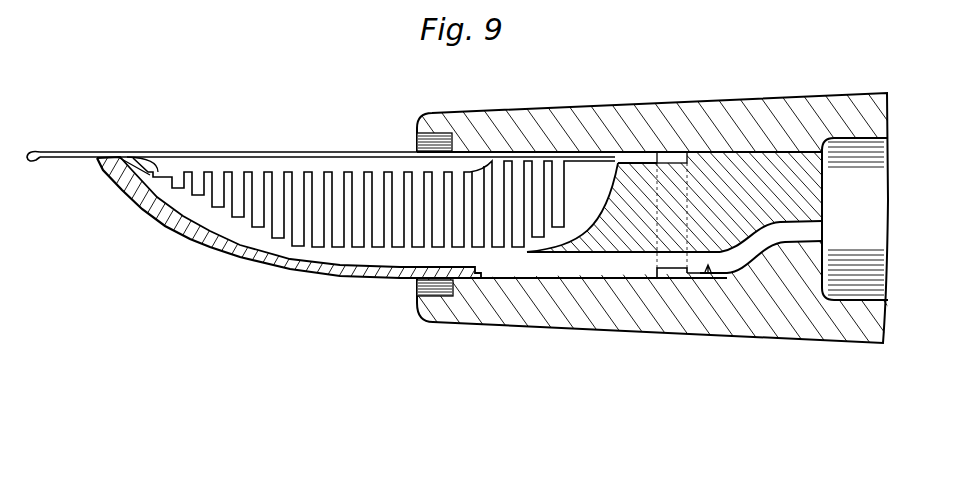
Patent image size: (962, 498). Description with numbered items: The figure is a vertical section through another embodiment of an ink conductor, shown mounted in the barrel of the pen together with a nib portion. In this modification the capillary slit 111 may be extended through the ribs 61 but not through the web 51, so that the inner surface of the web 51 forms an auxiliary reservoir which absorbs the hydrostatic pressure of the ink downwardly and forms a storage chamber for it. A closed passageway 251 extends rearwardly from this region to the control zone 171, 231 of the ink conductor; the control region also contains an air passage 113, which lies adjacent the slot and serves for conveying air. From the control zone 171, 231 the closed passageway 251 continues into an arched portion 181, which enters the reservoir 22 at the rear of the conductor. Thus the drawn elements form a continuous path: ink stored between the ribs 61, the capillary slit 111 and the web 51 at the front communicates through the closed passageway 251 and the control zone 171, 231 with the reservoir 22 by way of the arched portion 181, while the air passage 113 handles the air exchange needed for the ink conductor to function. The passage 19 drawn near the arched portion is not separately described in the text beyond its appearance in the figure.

The ribs 61 is at (308, 176).
The capillary slit 111 is at (283, 240).
The web 51 is at (253, 262).
The closed passageway 251 is at (216, 215).
The control zone 171 is at (675, 276).
The air passage 113 is at (697, 276).
The control zone 231 is at (708, 273).
The arched portion 181 is at (758, 242).
The channel 19 is at (810, 232).
The reservoir 22 is at (882, 207).